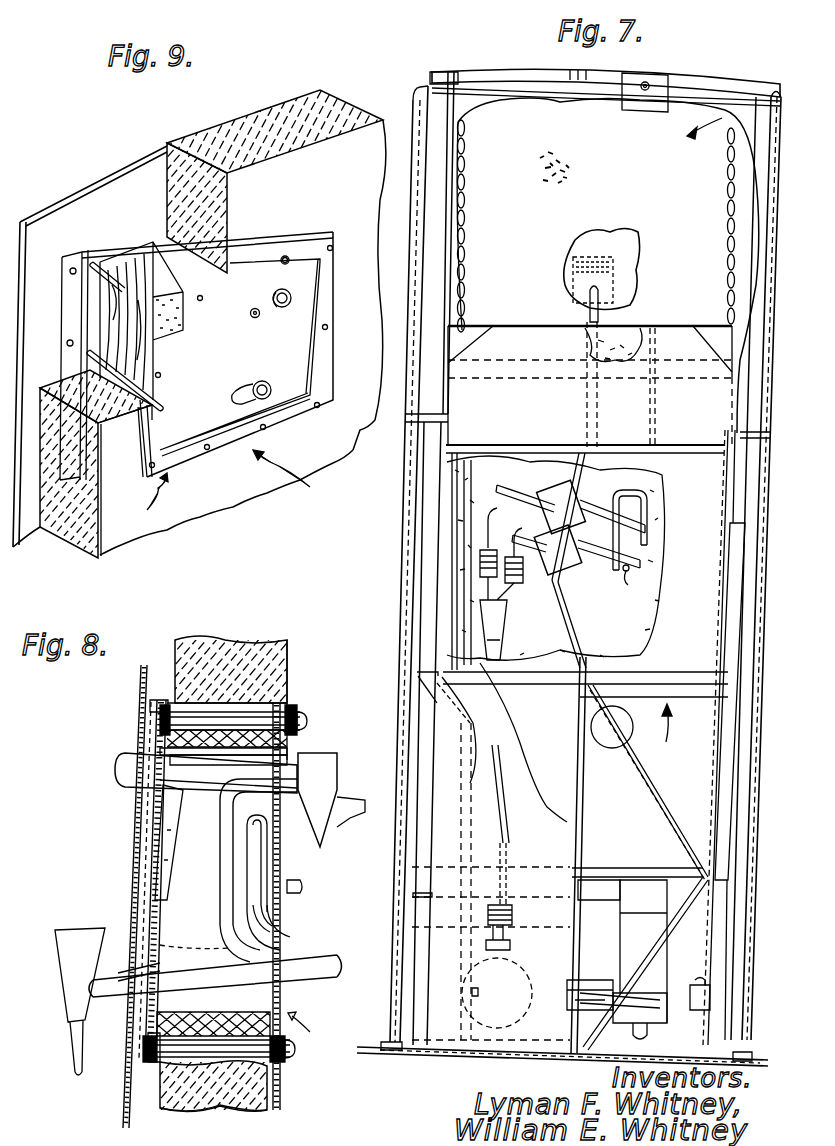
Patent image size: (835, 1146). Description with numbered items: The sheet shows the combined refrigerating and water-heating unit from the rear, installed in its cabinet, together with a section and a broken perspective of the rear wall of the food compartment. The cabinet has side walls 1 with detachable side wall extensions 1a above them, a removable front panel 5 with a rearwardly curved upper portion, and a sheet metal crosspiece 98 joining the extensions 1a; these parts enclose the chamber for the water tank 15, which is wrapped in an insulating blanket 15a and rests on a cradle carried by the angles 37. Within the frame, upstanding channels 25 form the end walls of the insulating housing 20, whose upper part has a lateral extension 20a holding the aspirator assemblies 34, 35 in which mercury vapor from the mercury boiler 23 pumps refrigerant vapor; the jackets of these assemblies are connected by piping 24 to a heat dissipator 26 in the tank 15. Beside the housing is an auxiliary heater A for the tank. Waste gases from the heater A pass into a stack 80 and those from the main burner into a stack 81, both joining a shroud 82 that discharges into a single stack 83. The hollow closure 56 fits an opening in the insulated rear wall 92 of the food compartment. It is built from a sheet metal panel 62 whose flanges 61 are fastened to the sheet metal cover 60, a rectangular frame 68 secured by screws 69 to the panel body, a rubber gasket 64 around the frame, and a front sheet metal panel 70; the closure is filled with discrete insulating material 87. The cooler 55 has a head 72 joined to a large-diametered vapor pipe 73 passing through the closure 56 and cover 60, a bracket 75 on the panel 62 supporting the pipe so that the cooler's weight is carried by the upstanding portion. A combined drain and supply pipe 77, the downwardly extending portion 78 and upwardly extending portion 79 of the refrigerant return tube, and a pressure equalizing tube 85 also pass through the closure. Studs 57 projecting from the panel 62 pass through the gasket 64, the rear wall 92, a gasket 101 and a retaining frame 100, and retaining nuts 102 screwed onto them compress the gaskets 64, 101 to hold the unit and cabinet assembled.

In FIG. 7, the side walls 1 is at (412, 656).
In FIG. 7, the side wall extensions 1a is at (413, 110).
In FIG. 7, the removable front panel 5 is at (508, 77).
In FIG. 7, the water tank 15 is at (607, 243).
In FIG. 7, the insulating material 15a is at (717, 120).
In FIG. 7, the housing 20 is at (582, 836).
In FIG. 7, the lateral extension 20a is at (639, 728).
In FIG. 7, the mercury boiler 23 is at (520, 978).
In FIG. 7, the piping 24 is at (592, 445).
In FIG. 7, the upstanding channels 25 is at (400, 1008).
In FIG. 7, the heat dissipator 26 is at (614, 277).
In FIG. 7, the aspirator assembly 34 is at (571, 525).
In FIG. 7, the aspirator assembly 35 is at (560, 584).
In FIG. 7, the angles 37 is at (452, 403).
In FIG. 8, the cooler 55 is at (348, 808).
In FIG. 9, the closure 56 is at (228, 492).
In FIG. 8, the closure 56 is at (310, 1026).
In FIG. 9, the studs 57 is at (122, 362).
In FIG. 8, the studs 57 is at (255, 1068).
In FIG. 9, the sheet metal cover 60 is at (72, 205).
In FIG. 8, the sheet metal cover 60 is at (138, 832).
In FIG. 9, the flanges 61 is at (70, 286).
In FIG. 8, the flanges 61 is at (142, 858).
In FIG. 9, the sheet metal panel 62 is at (108, 250).
In FIG. 8, the sheet metal panel 62 is at (148, 885).
In FIG. 9, the rubber gasket 64 is at (147, 243).
In FIG. 8, the rubber gasket 64 is at (172, 700).
In FIG. 9, the rectangular frame 68 is at (222, 262).
In FIG. 8, the rectangular frame 68 is at (282, 708).
In FIG. 8, the screws 69 is at (150, 716).
In FIG. 9, the sheet metal panel 70 is at (292, 390).
In FIG. 8, the sheet metal panel 70 is at (283, 856).
In FIG. 8, the head 72 is at (317, 800).
In FIG. 9, the vapor pipe 73 is at (276, 308).
In FIG. 8, the vapor pipe 73 is at (206, 773).
In FIG. 8, the bracket 75 is at (176, 816).
In FIG. 9, the drain and supply pipe 77 is at (250, 388).
In FIG. 8, the drain and supply pipe 77 is at (326, 958).
In FIG. 8, the downwardly extending portion 78 is at (258, 930).
In FIG. 8, the upwardly extending portion 79 is at (218, 940).
In FIG. 7, the stack 80 is at (418, 718).
In FIG. 7, the stack 81 is at (424, 552).
In FIG. 7, the shroud 82 is at (430, 392).
In FIG. 7, the stack 83 is at (433, 337).
In FIG. 9, the pressure equalizing tube 85 is at (252, 320).
In FIG. 8, the pressure equalizing tube 85 is at (221, 866).
In FIG. 9, the insulating material 87 is at (186, 312).
In FIG. 9, the rear wall 92 is at (224, 498).
In FIG. 8, the rear wall 92 is at (275, 1100).
In FIG. 7, the crosspiece 98 is at (608, 262).
In FIG. 9, the retaining frame 100 is at (330, 290).
In FIG. 8, the retaining frame 100 is at (270, 735).
In FIG. 9, the gasket 101 is at (150, 412).
In FIG. 8, the gasket 101 is at (282, 718).
In FIG. 9, the retaining nuts 102 is at (296, 255).
In FIG. 8, the retaining nuts 102 is at (306, 724).
In FIG. 7, the auxiliary heater A is at (618, 948).